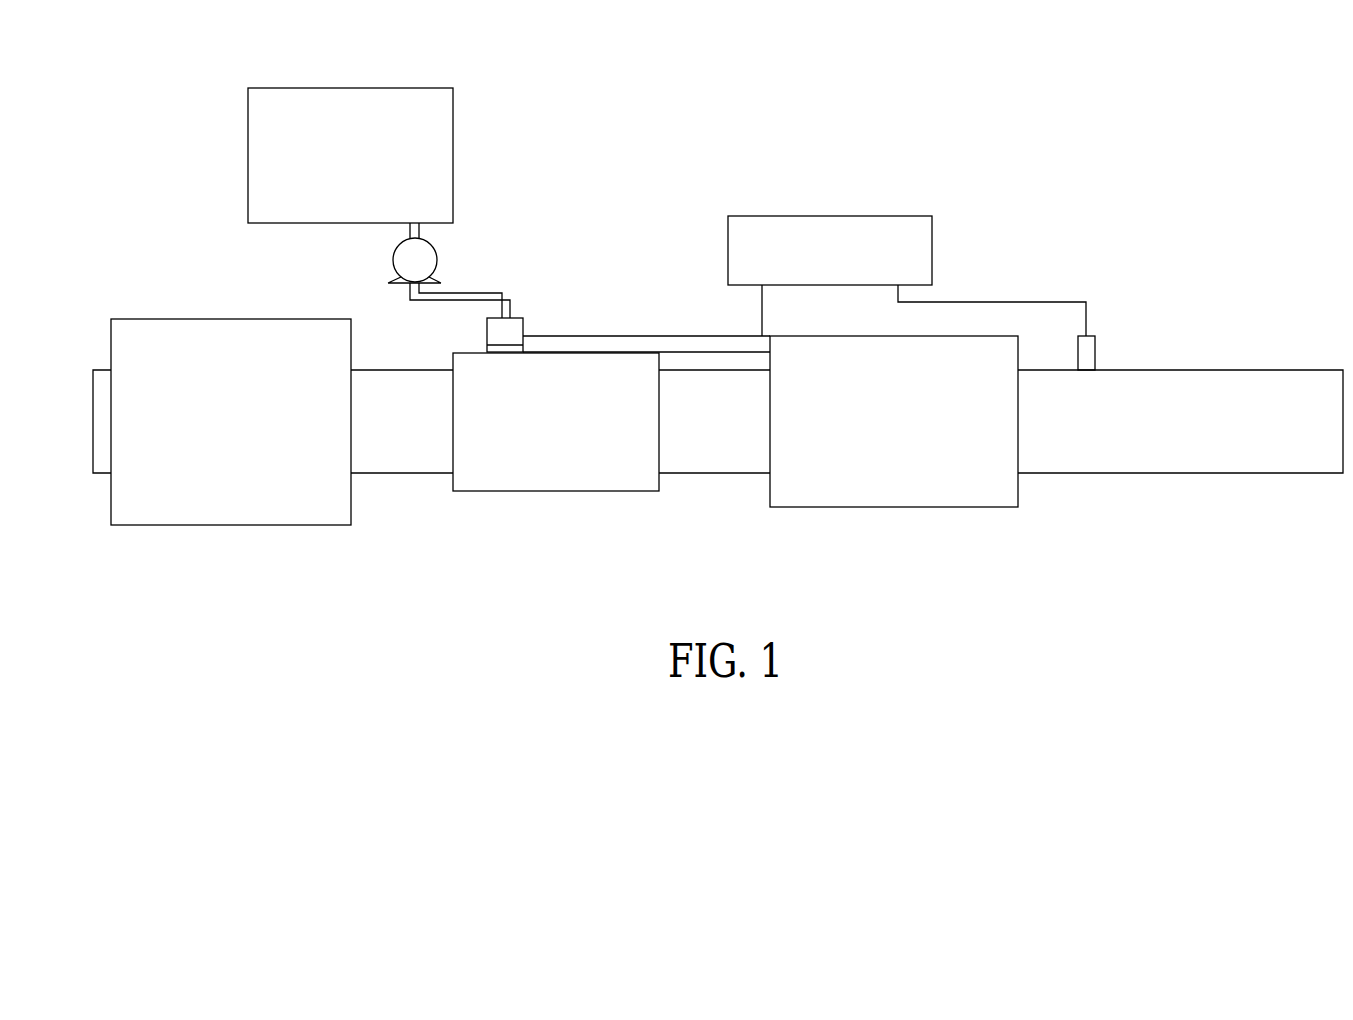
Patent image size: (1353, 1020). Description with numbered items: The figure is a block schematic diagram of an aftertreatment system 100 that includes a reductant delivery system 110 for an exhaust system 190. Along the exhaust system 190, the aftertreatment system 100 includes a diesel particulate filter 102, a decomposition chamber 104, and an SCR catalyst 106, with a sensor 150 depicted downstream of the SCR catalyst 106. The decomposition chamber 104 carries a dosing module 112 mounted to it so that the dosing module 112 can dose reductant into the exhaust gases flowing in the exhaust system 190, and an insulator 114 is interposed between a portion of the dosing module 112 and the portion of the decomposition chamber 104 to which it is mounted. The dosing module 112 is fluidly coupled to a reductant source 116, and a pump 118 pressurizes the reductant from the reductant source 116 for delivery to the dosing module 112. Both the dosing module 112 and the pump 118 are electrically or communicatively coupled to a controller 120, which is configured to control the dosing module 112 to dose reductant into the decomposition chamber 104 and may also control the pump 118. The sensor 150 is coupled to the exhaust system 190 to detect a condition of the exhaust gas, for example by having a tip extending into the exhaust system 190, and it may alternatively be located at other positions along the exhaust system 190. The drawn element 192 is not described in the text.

The aftertreatment system 100 is at (975, 278).
The diesel particulate filter 102 is at (258, 525).
The decomposition chamber 104 is at (650, 353).
The SCR catalyst 106 is at (905, 507).
The reductant delivery system 110 is at (616, 262).
The dosing module 112 is at (522, 330).
The insulator 114 is at (487, 345).
The reductant source 116 is at (412, 88).
The pump 118 is at (393, 258).
The controller 120 is at (815, 216).
The sensor 150 is at (1115, 345).
The exhaust system 190 is at (442, 568).
The drive shaft 192 is at (1265, 488).